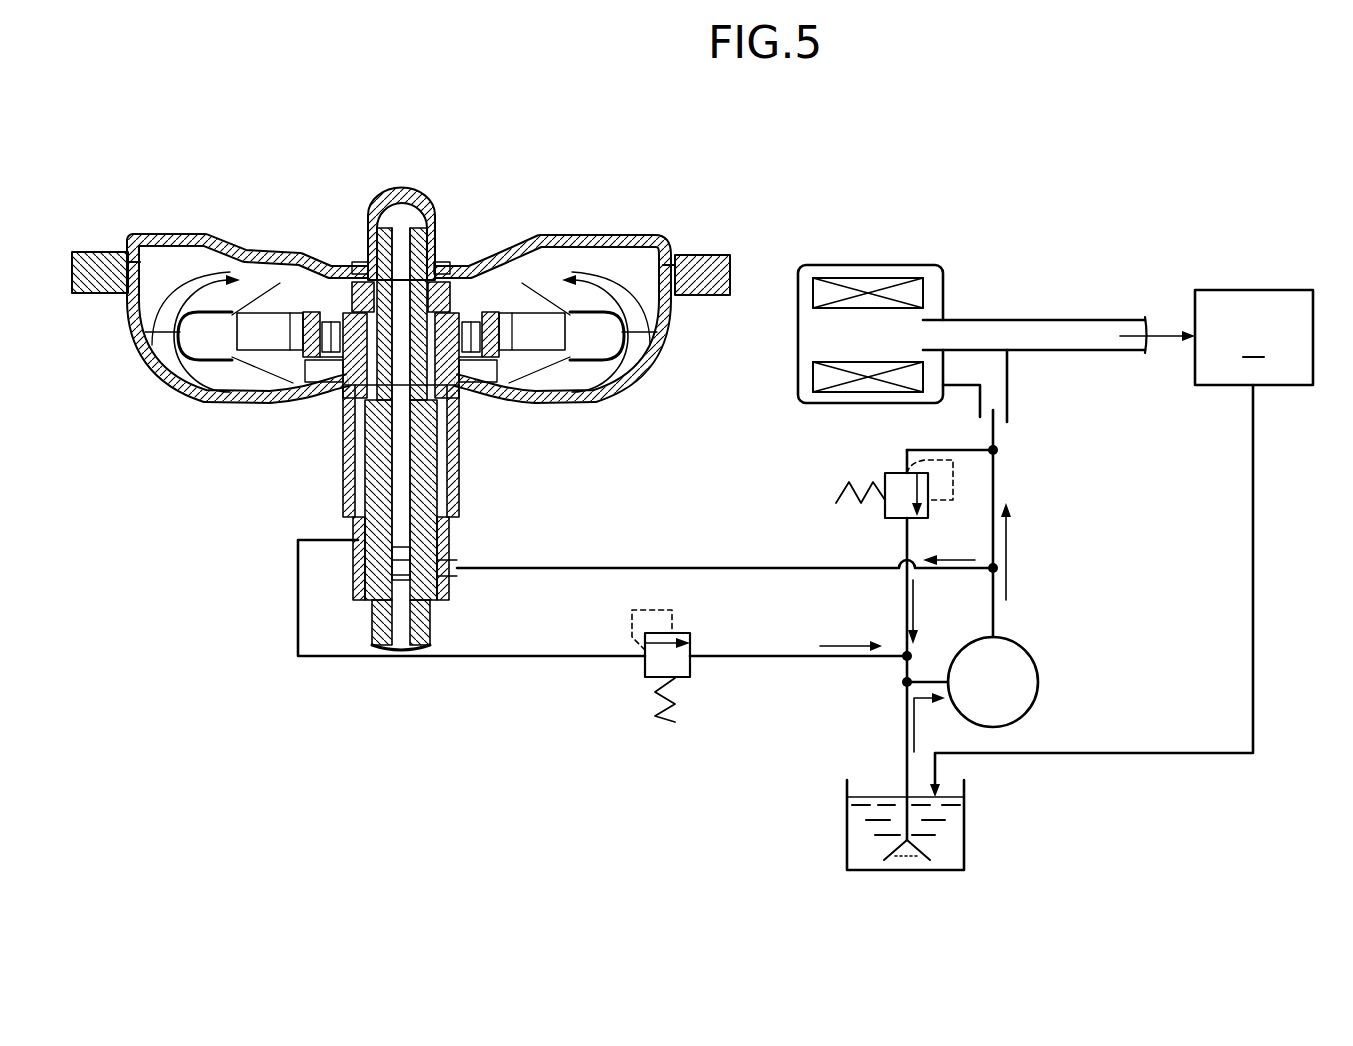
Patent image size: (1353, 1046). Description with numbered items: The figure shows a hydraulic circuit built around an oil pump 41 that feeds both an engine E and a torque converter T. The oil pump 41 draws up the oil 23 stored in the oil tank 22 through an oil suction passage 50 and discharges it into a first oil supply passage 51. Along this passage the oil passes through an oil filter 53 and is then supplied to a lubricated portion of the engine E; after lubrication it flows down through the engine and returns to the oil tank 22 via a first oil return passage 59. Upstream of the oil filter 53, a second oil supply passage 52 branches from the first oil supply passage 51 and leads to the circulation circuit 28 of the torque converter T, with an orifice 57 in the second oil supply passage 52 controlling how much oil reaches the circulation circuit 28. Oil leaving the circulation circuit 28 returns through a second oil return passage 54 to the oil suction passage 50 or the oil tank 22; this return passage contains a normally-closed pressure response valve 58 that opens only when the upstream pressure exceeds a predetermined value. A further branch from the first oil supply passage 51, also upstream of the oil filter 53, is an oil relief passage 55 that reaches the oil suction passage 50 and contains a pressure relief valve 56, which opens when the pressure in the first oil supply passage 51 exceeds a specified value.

The torque converter T is at (573, 225).
The circulation circuit 28 is at (572, 390).
The orifice 57 is at (398, 550).
The second oil supply passage 52 is at (707, 568).
The second oil return passage 54 is at (580, 656).
The pressure response valve 58 is at (662, 663).
The oil relief passage 55 is at (904, 450).
The pressure relief valve 56 is at (895, 513).
The oil filter 53 is at (870, 280).
The first oil supply passage 51 is at (1063, 345).
The engine E is at (1254, 337).
The first oil return passage 59 is at (1253, 552).
The oil pump 41 is at (1006, 668).
The oil suction passage 50 is at (903, 742).
The oil 23 is at (867, 798).
The oil tank 22 is at (847, 832).